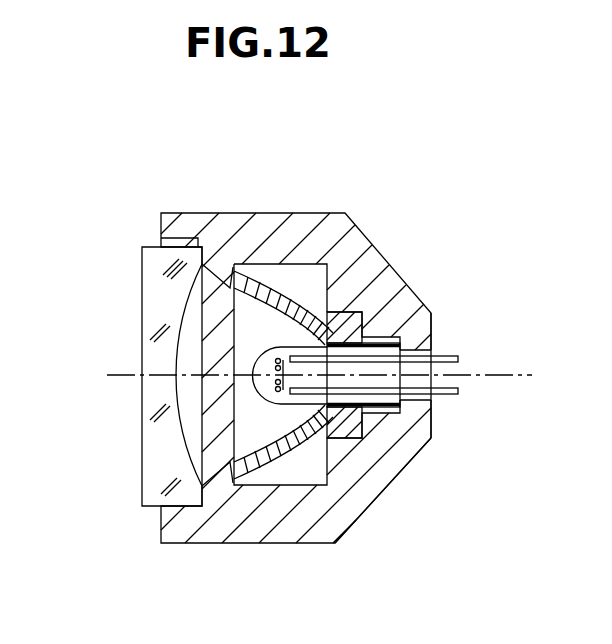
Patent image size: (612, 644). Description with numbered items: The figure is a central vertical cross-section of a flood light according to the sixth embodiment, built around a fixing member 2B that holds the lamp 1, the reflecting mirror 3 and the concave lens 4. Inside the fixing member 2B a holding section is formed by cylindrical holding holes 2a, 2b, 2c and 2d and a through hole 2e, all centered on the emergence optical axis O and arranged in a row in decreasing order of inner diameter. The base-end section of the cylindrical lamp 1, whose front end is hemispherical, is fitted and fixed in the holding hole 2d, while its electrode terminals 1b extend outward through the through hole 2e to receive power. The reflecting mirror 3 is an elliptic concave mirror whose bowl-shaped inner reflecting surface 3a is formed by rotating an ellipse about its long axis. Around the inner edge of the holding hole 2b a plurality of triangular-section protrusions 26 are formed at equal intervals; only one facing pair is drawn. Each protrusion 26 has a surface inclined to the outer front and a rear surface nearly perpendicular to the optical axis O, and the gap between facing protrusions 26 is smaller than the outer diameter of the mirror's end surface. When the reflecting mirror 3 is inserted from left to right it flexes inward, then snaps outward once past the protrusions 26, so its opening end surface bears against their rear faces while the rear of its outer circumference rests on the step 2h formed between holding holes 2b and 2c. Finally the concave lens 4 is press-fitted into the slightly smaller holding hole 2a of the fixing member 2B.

The fixing member 2B is at (290, 235).
The holding hole 2a is at (181, 236).
The holding hole 2b is at (245, 273).
The holding hole 2c is at (343, 303).
The holding hole 2d is at (380, 326).
The through hole 2e is at (417, 373).
The step 2h is at (373, 490).
The concave lens 4 is at (153, 273).
The protrusions 26 is at (233, 270).
The reflecting mirror 3 is at (259, 284).
The reflecting surface 3a is at (270, 462).
The lamp 1 is at (355, 352).
The electrode terminals 1b is at (458, 391).
The emergence optical axis O is at (125, 373).